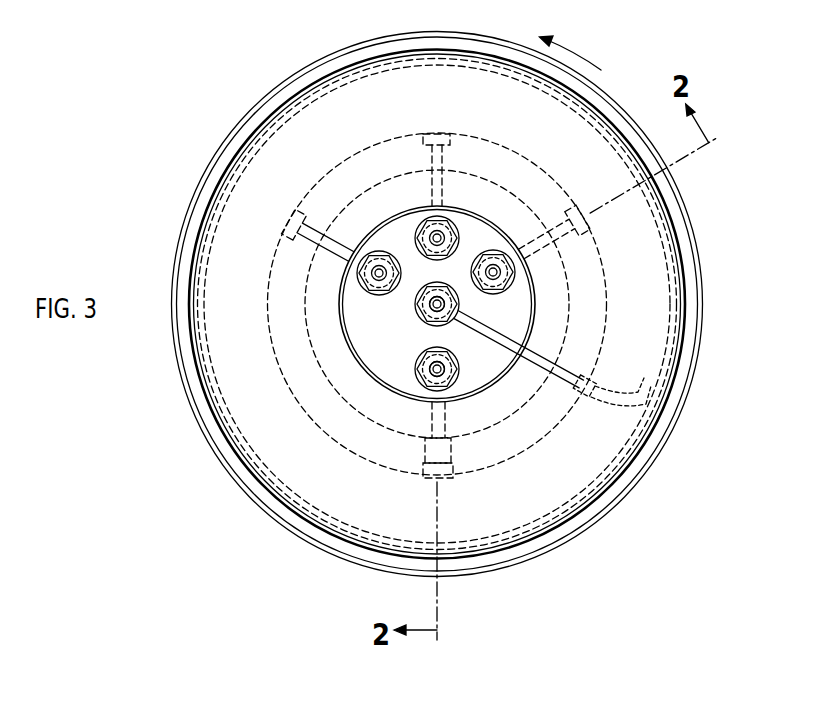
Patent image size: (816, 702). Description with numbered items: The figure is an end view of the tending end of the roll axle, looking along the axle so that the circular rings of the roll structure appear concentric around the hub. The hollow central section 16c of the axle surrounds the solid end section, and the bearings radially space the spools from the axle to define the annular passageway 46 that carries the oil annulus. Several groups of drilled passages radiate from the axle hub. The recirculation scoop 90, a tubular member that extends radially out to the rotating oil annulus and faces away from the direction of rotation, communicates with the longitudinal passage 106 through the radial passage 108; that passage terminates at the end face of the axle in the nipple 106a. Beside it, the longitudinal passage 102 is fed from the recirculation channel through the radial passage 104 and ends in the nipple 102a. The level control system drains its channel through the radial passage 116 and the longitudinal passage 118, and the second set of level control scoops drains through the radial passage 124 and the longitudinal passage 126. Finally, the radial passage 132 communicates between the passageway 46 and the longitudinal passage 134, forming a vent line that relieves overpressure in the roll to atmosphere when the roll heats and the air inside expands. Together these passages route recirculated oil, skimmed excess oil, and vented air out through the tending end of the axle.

The annular passageway 46 is at (346, 137).
The hollow central section 16c is at (352, 457).
The radial passage 132 is at (444, 158).
The longitudinal passage 134 is at (448, 221).
The radial passage 124 is at (336, 228).
The radial passage 116 is at (536, 236).
The radial passage 104 is at (446, 417).
The longitudinal passage 126 is at (377, 288).
The longitudinal passage 118 is at (518, 276).
The longitudinal passage 106 is at (422, 313).
The nipple 106a is at (430, 328).
The longitudinal passage 102 is at (416, 368).
The nipple 102a is at (456, 365).
The radial passage 108 is at (481, 322).
The scoop 90 is at (618, 411).